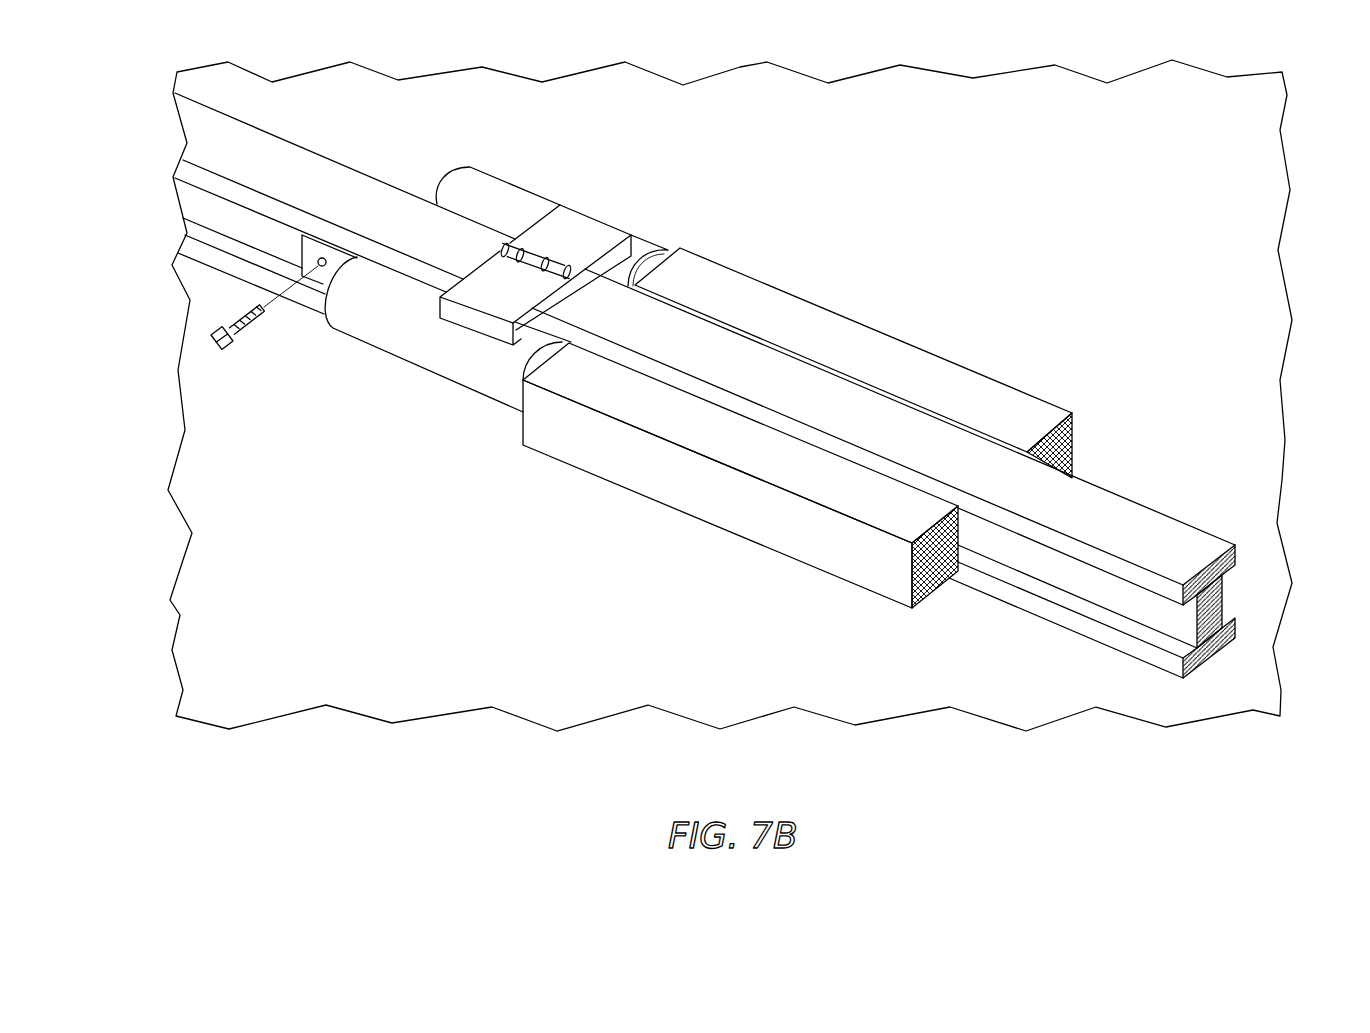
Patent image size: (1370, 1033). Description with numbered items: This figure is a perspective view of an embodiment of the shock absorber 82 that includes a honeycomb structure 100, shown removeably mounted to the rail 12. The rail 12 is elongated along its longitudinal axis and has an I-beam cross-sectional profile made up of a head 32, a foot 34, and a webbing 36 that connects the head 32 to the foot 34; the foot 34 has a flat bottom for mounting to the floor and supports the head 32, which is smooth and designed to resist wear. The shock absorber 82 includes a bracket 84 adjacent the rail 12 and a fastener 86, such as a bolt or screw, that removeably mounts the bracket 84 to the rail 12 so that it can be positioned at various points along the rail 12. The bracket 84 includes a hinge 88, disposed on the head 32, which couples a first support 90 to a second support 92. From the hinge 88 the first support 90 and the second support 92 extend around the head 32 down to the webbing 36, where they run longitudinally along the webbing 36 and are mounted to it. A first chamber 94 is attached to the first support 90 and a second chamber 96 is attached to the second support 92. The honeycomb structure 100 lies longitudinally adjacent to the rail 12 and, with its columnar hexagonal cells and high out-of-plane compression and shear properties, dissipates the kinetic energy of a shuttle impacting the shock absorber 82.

The rail 12 is at (1141, 495).
The head 32 is at (1233, 560).
The foot 34 is at (1227, 635).
The webbing 36 is at (1210, 610).
The shock absorber 82 is at (788, 162).
The bracket 84 is at (628, 225).
The fastener 86 is at (210, 350).
The hinge 88 is at (555, 264).
The first support 90 is at (573, 225).
The second support 92 is at (490, 305).
The first chamber 94 is at (486, 192).
The second chamber 96 is at (373, 335).
The honeycomb structure 100 is at (838, 334).